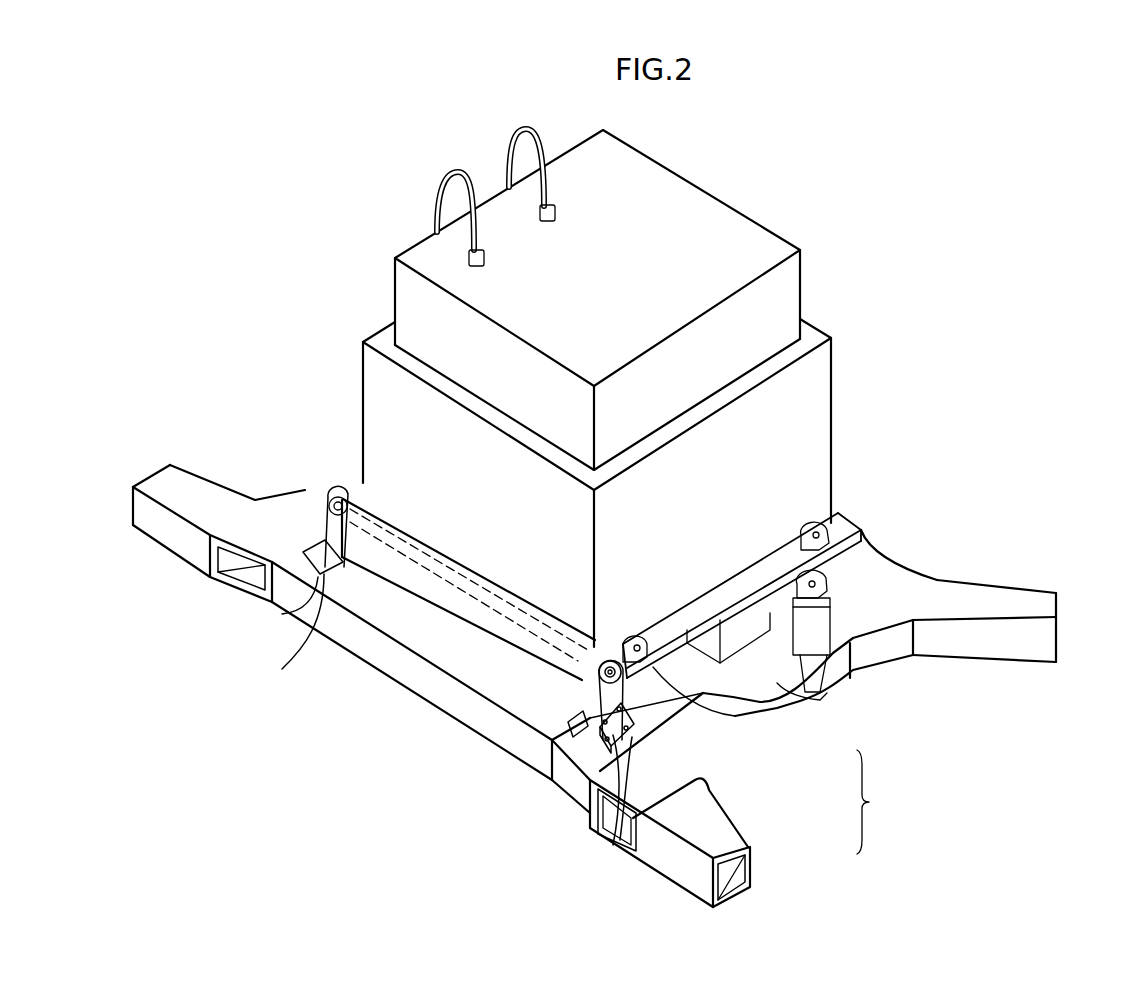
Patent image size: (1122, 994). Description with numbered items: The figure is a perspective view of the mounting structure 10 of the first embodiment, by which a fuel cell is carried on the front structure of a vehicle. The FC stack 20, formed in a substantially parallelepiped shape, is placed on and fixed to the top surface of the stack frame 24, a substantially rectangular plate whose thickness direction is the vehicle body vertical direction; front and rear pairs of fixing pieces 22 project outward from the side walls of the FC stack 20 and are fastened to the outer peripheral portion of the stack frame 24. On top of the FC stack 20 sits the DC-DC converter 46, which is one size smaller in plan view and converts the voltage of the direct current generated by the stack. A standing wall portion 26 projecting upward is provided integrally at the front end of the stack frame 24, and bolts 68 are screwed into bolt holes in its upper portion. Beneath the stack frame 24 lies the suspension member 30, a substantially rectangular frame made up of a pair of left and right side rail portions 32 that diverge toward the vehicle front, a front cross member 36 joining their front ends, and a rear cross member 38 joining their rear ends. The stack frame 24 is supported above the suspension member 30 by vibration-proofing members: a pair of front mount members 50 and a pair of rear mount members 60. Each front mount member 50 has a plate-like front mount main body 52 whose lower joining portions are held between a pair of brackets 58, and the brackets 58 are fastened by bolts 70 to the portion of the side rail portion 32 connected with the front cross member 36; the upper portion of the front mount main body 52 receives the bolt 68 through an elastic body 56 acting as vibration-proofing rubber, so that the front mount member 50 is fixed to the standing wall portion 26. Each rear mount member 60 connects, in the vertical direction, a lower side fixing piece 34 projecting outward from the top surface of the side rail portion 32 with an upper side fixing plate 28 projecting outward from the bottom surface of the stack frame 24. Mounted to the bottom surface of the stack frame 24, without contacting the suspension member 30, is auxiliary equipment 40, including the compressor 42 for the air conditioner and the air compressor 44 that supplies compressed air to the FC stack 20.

The mounting structure 10 is at (528, 797).
The FC stack 20 is at (840, 383).
The fixing pieces 22 is at (813, 524).
The stack frame 24 is at (852, 512).
The standing wall portion 26 is at (458, 617).
The upper side fixing plate 28 is at (800, 579).
The suspension member 30 is at (1002, 578).
The side rail portions 32 is at (353, 483).
The lower side fixing piece 34 is at (852, 698).
The front cross member 36 is at (370, 655).
The rear cross member 38 is at (890, 553).
The auxiliary equipment 40 is at (879, 802).
The compressor for the air conditioner 42 is at (703, 705).
The air compressor 44 is at (740, 640).
The DC-DC converter 46 is at (678, 218).
The front mount members 50 is at (235, 582).
The front mount main body 52 is at (333, 484).
The elastic body 56 is at (593, 752).
The brackets 58 is at (310, 558).
The rear mount members 60 is at (836, 617).
The bolts 68 is at (590, 662).
The bolts 70 is at (320, 619).